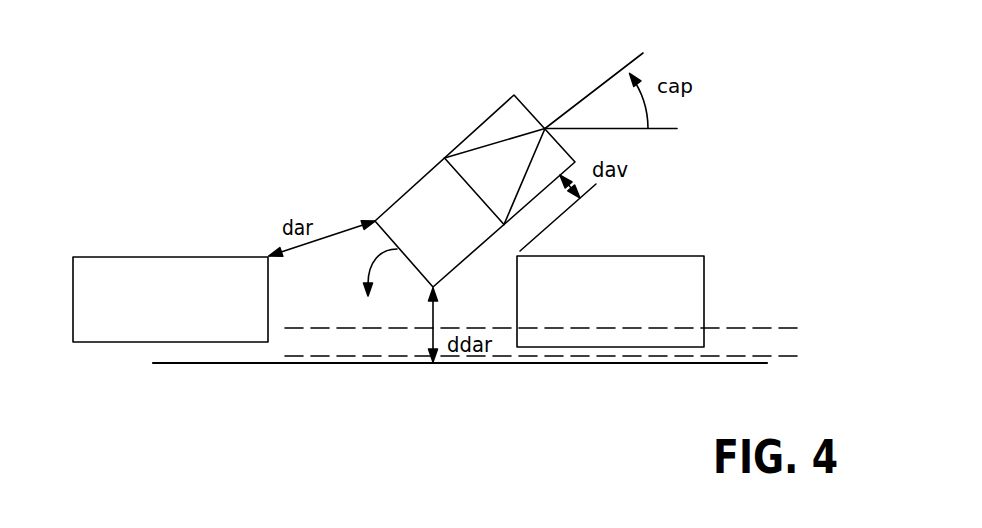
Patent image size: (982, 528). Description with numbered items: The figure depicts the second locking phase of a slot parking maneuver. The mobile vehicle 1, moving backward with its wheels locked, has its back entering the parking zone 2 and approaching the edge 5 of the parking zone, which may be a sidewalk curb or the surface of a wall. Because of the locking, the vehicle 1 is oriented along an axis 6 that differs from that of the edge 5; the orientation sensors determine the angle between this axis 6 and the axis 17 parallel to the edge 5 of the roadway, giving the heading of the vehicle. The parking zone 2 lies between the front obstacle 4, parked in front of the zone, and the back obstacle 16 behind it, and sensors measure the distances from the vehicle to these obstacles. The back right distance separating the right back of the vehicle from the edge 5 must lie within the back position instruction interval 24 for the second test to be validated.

The mobile vehicle 1 is at (442, 203).
The parking zone 2 is at (490, 312).
The front obstacle 4 is at (673, 277).
The edge of the parking zone 5 is at (730, 362).
The axis of the vehicle 6 is at (625, 65).
The back obstacle 16 is at (184, 293).
The axis parallel to the edge of the roadway 17 is at (659, 129).
The back position instruction interval 24 is at (346, 353).